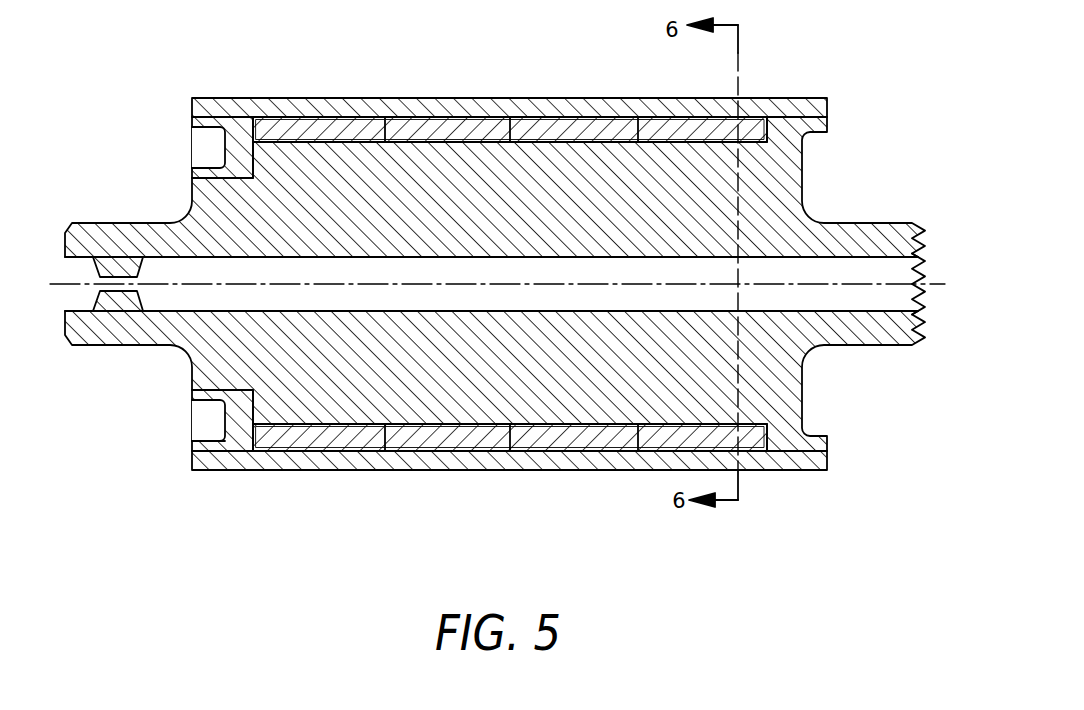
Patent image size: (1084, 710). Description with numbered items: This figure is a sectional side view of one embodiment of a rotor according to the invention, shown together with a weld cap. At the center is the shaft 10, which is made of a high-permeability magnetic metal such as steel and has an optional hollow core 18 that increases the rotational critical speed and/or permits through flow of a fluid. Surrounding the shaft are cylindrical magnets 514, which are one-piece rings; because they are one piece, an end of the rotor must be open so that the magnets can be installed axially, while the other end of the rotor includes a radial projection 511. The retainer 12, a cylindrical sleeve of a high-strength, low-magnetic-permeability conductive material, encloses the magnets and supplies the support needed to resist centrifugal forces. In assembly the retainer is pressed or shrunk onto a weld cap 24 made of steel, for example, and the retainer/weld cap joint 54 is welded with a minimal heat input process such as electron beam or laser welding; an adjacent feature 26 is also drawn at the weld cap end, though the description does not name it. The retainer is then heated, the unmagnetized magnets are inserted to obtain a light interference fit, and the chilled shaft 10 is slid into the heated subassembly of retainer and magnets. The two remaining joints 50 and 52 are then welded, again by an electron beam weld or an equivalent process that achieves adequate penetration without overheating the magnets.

The shaft 10 is at (118, 223).
The retainer 12 is at (510, 299).
The hollow core 18 is at (502, 297).
The weld cap 24 is at (208, 447).
The seal groove 26 is at (207, 418).
The joint 50 is at (200, 366).
The joint 52 is at (797, 487).
The retainer/weld cap joint 54 is at (249, 468).
The radial projection 511 is at (830, 123).
The cylindrical magnets 514 is at (347, 440).